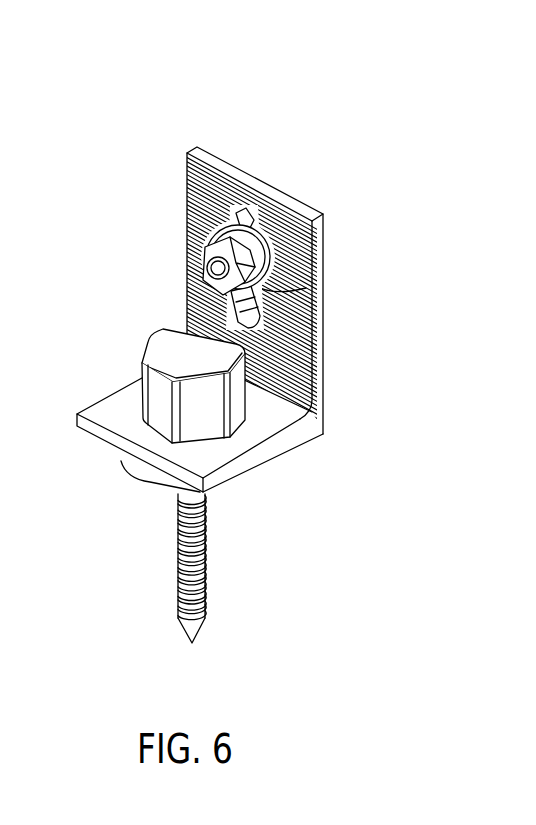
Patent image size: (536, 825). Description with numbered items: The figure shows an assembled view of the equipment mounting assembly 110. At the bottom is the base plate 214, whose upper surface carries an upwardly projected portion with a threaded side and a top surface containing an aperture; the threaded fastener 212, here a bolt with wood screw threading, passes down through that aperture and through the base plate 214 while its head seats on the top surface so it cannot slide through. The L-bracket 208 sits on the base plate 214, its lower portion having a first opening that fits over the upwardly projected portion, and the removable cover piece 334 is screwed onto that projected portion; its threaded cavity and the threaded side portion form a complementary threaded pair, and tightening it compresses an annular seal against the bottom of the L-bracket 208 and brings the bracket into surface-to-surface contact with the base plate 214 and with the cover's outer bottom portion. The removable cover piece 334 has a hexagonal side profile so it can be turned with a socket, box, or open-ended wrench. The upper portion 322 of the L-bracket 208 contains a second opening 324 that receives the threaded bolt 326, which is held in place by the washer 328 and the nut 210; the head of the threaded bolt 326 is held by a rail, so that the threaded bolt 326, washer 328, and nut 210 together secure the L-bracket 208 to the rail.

The equipment mounting assembly 110 is at (160, 68).
The L-bracket 208 is at (220, 284).
The nut 210 is at (272, 289).
The threaded fastener 212 is at (207, 552).
The base plate 214 is at (147, 479).
The upper portion 322 is at (197, 148).
The second opening 324 is at (243, 209).
The threaded bolt 326 is at (210, 270).
The washer 328 is at (268, 237).
The removable cover piece 334 is at (154, 379).